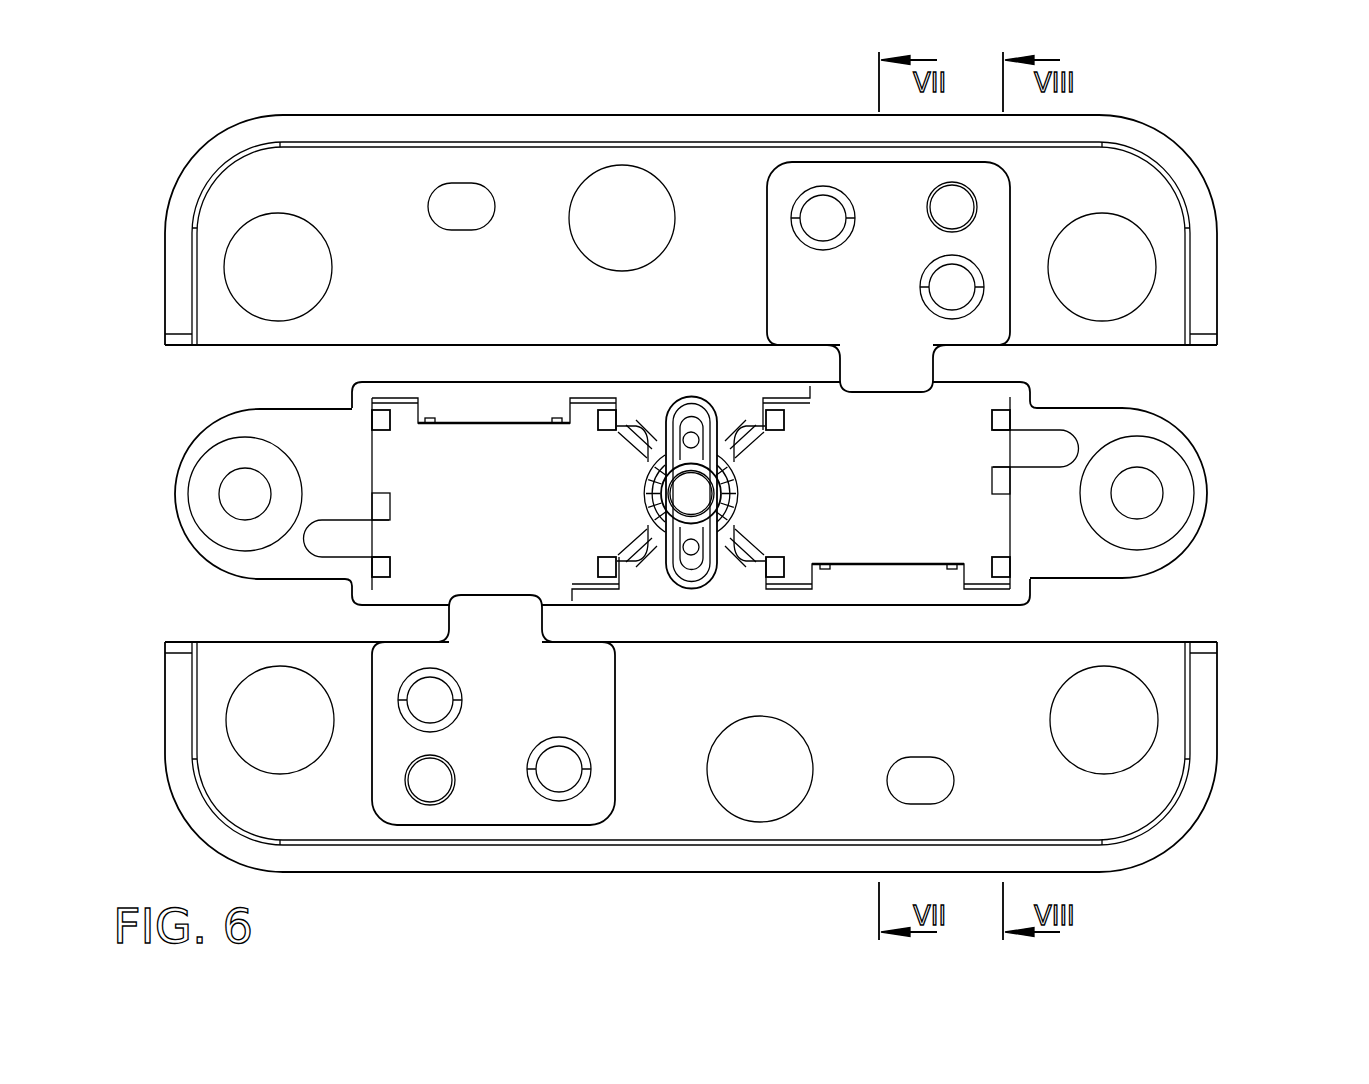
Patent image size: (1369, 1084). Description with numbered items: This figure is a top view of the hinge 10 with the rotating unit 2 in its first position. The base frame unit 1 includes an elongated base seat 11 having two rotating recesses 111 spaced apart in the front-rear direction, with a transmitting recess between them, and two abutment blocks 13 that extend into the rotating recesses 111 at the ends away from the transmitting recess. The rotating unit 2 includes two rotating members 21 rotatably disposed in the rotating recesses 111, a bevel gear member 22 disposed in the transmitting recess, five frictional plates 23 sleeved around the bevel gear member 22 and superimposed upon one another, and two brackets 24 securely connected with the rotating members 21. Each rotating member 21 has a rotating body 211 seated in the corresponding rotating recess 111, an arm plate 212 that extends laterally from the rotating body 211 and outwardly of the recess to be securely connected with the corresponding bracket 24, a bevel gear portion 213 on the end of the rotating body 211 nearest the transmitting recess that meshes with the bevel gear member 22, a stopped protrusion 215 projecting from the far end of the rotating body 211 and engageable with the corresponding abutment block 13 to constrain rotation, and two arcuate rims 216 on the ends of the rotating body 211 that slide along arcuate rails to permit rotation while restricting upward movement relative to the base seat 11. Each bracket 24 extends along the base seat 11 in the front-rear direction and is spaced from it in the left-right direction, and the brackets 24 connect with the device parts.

The hinge 10 is at (167, 130).
The base frame unit 1 is at (711, 495).
The base seat 11 is at (1120, 567).
The rotating recess 111 is at (478, 405).
The abutment block 13 is at (1062, 447).
The rotating unit 2 is at (752, 485).
The rotating member 21 is at (684, 497).
The rotating body 211 is at (513, 465).
The arm plate 212 is at (892, 210).
The bevel gear portion 213 is at (765, 463).
The stopped protrusion 215 is at (380, 455).
The arcuate rim 216 is at (382, 418).
The bevel gear member 22 is at (650, 500).
The frictional plate 23 is at (705, 568).
The bracket 24 is at (1180, 146).